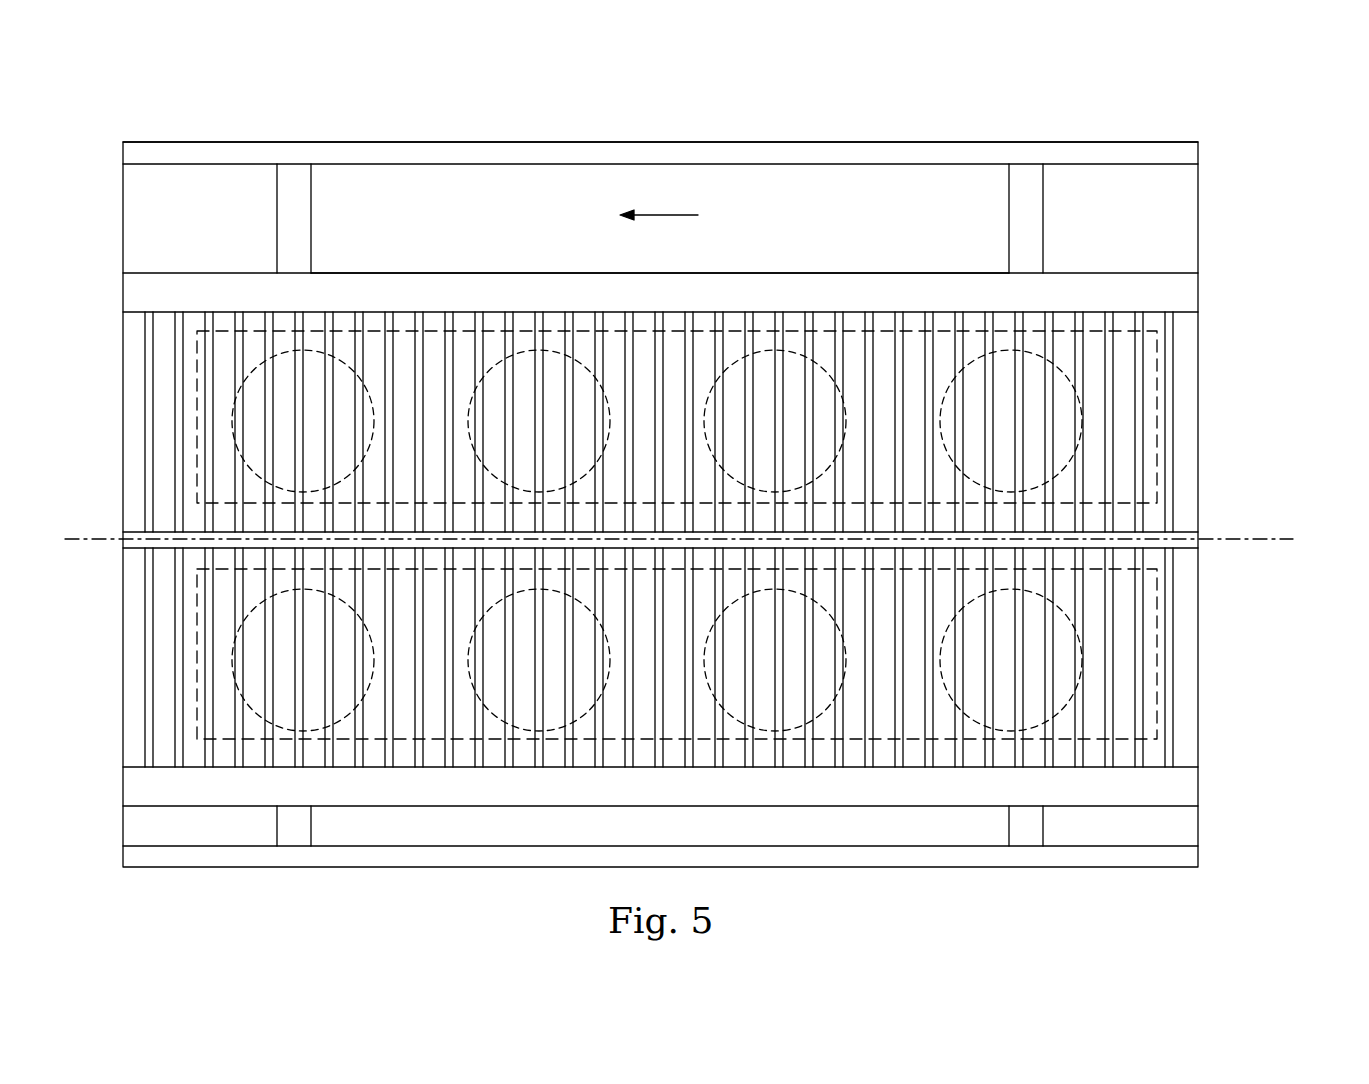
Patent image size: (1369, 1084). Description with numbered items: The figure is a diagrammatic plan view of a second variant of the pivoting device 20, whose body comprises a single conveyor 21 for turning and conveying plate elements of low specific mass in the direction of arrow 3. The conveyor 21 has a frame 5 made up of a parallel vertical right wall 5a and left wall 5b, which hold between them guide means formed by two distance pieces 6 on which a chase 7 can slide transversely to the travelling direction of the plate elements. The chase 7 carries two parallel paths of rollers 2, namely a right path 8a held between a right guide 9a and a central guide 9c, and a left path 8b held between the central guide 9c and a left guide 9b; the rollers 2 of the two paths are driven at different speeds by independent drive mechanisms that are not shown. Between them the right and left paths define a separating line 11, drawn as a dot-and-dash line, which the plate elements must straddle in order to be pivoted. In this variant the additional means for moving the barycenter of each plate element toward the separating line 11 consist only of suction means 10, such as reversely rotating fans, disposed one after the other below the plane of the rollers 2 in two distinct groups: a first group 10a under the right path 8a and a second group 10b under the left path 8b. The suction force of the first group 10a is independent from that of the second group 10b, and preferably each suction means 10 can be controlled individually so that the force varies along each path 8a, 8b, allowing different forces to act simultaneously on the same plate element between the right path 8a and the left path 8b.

The rollers 2 is at (130, 405).
The arrow 3 is at (663, 215).
The frame 5 is at (250, 122).
The right wall 5a is at (136, 158).
The left wall 5b is at (137, 858).
The distance pieces 6 is at (286, 222).
The chase 7 is at (871, 258).
The right path 8a is at (1216, 403).
The left path 8b is at (1215, 648).
The right guide 9a is at (137, 303).
The left guide 9b is at (137, 793).
The central guide 9c is at (136, 540).
The suction means 10 is at (356, 372).
The first group 10a is at (1155, 460).
The second group 10b is at (1155, 705).
The separating line 11 is at (1283, 537).
The pivoting device 20 is at (1278, 170).
The conveyor 21 is at (774, 122).